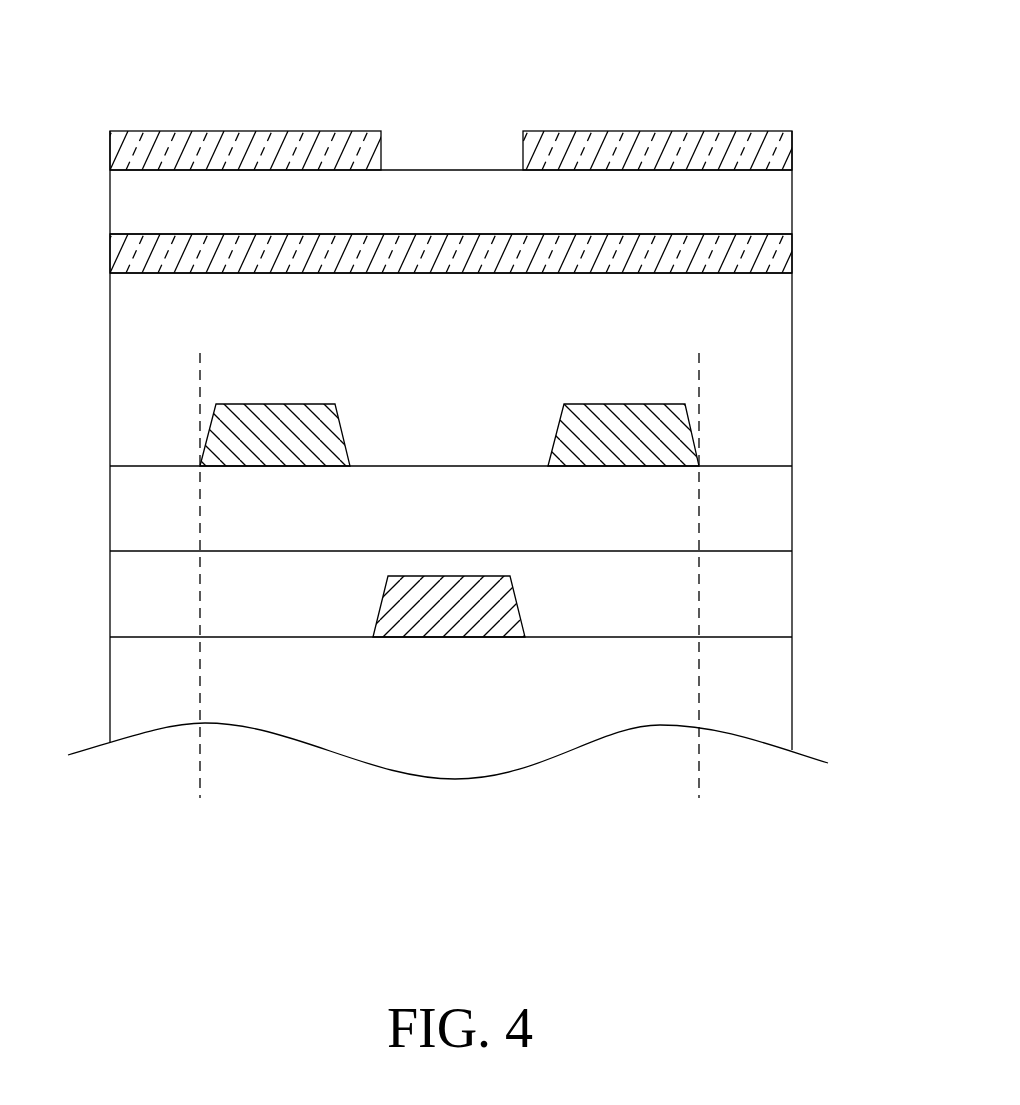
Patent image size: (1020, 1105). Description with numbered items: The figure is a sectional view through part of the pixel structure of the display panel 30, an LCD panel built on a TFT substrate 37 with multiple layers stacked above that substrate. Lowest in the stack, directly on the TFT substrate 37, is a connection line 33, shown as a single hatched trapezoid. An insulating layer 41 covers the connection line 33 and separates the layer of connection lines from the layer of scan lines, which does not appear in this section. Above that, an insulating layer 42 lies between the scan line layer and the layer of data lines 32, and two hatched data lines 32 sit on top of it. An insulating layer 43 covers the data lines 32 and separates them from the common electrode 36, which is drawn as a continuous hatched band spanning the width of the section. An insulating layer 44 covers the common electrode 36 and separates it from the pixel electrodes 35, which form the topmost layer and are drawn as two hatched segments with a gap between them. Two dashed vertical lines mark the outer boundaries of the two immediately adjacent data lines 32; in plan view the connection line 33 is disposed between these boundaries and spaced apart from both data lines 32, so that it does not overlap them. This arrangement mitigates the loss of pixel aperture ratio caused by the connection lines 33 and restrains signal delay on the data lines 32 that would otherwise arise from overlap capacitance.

The display panel 30 is at (128, 76).
The data lines 32 is at (680, 438).
The connection line 33 is at (488, 612).
The pixel electrodes 35 is at (763, 158).
The common electrode 36 is at (770, 262).
The TFT substrate 37 is at (738, 702).
The insulating layer 41 is at (125, 601).
The insulating layer 42 is at (133, 510).
The insulating layer 43 is at (138, 352).
The insulating layer 44 is at (133, 206).